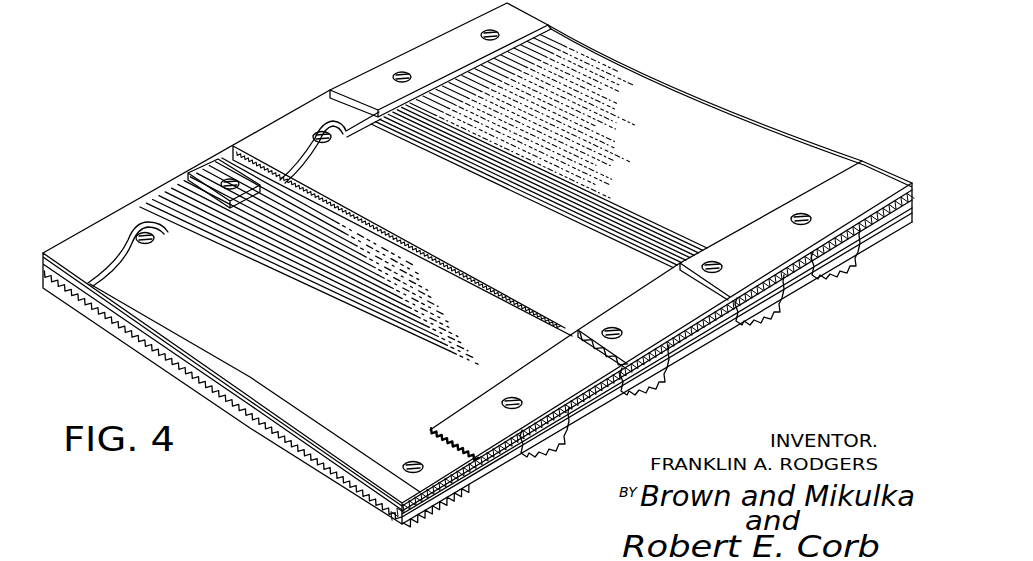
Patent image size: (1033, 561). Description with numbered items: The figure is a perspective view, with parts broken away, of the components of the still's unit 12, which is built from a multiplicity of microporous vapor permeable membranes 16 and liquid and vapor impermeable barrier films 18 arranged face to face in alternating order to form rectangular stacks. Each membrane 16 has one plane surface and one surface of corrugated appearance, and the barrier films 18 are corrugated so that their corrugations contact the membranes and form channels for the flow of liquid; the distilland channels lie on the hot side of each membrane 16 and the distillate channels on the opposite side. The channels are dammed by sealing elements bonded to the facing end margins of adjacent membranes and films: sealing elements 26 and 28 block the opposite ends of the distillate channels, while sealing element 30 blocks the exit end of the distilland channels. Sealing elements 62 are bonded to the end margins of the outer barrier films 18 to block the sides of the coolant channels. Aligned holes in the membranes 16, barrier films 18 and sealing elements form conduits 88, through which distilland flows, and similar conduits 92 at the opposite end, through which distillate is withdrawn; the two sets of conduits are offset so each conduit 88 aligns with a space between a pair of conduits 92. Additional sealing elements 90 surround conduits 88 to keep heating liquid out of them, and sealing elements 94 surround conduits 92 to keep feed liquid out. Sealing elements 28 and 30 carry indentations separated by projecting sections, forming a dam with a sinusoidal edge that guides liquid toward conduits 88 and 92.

The unit 12 is at (656, 73).
The microporous vapor permeable membrane 16 is at (454, 215).
The barrier film 18 is at (713, 120).
The sealing element 26 is at (679, 333).
The sealing element 28 is at (85, 248).
The sealing element 30 is at (585, 392).
The sealing element 62 is at (432, 48).
The conduit 88 is at (800, 212).
The sealing element 90 is at (848, 264).
The conduit 92 is at (392, 74).
The sealing element 94 is at (197, 173).